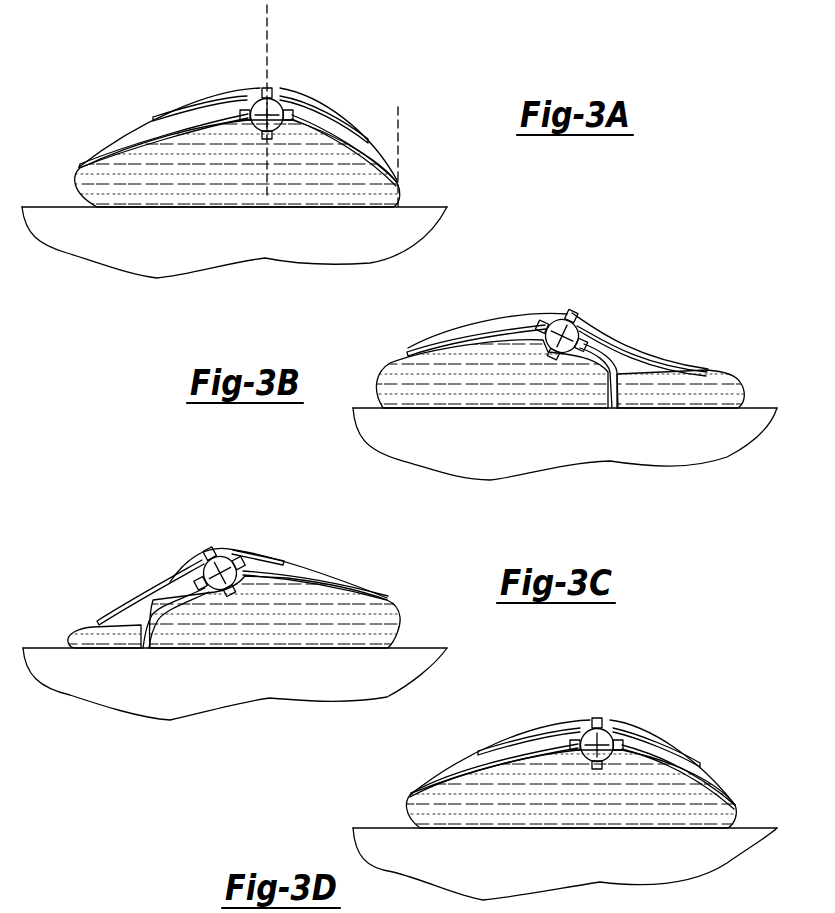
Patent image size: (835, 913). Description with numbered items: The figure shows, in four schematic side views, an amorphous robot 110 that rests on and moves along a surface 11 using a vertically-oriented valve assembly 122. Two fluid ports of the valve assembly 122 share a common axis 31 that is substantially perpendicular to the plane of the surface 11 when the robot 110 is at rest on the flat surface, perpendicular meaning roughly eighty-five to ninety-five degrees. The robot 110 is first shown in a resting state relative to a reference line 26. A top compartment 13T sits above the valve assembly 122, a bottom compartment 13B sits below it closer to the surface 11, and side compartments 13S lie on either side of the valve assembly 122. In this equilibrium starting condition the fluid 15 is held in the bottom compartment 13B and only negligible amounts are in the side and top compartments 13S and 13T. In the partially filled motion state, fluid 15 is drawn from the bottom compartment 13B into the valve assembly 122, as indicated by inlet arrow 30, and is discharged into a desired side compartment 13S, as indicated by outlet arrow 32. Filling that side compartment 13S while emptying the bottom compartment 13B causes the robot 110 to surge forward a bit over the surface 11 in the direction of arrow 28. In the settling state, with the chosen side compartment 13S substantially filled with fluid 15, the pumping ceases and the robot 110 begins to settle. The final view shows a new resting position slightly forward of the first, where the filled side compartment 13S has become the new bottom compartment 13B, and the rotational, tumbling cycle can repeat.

In FIG. 3A, the amorphous robot 110 is at (365, 66).
In FIG. 3B, the amorphous robot 110 is at (684, 311).
In FIG. 3C, the amorphous robot 110 is at (347, 540).
In FIG. 3D, the amorphous robot 110 is at (677, 702).
In FIG. 3A, the surface 11 is at (436, 205).
In FIG. 3B, the surface 11 is at (766, 405).
In FIG. 3C, the surface 11 is at (436, 645).
In FIG. 3D, the surface 11 is at (766, 825).
In FIG. 3A, the bottom compartment 13B is at (230, 187).
In FIG. 3B, the bottom compartment 13B is at (509, 394).
In FIG. 3C, the bottom compartment 13B is at (90, 627).
In FIG. 3A, the side compartments 13S is at (322, 123).
In FIG. 3B, the side compartments 13S is at (689, 401).
In FIG. 3C, the side compartments 13S is at (304, 630).
In FIG. 3D, the side compartments 13S is at (580, 812).
In FIG. 3A, the top compartment 13T is at (308, 100).
In FIG. 3B, the top compartment 13T is at (602, 336).
In FIG. 3C, the top compartment 13T is at (270, 568).
In FIG. 3D, the top compartment 13T is at (660, 750).
In FIG. 3A, the fluid 15 is at (117, 150).
In FIG. 3B, the fluid 15 is at (599, 376).
In FIG. 3C, the fluid 15 is at (367, 593).
In FIG. 3D, the fluid 15 is at (572, 776).
In FIG. 3A, the vertically-oriented valve assembly 122 is at (260, 100).
In FIG. 3B, the vertically-oriented valve assembly 122 is at (562, 313).
In FIG. 3C, the vertically-oriented valve assembly 122 is at (223, 557).
In FIG. 3D, the vertically-oriented valve assembly 122 is at (588, 731).
In FIG. 3A, the common axis 31 is at (262, 17).
In FIG. 3A, the reference line 26 is at (400, 125).
In FIG. 3B, the arrow 28 is at (747, 353).
In FIG. 3B, the inlet arrow 30 is at (538, 374).
In FIG. 3B, the outlet arrow 32 is at (624, 371).